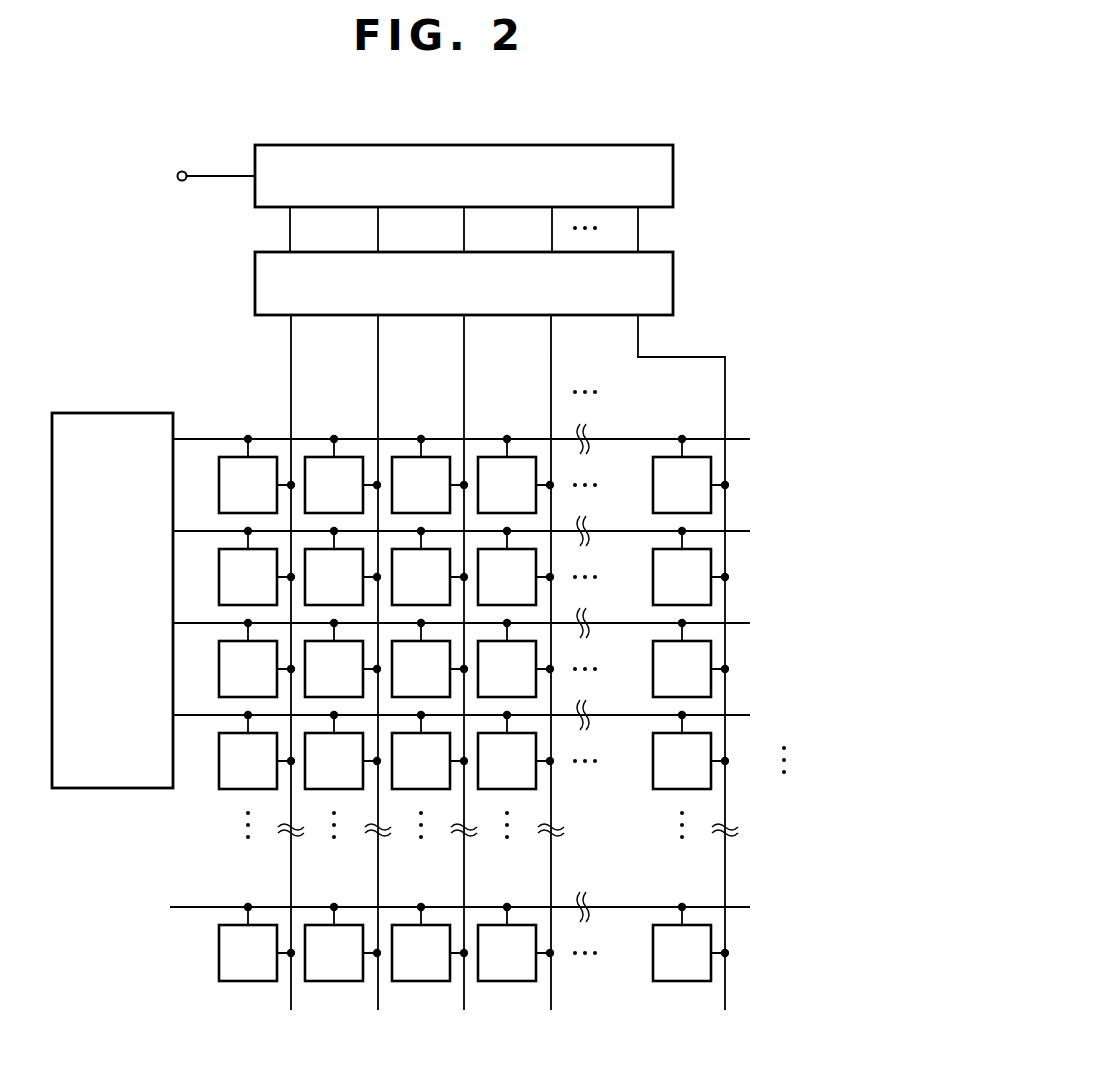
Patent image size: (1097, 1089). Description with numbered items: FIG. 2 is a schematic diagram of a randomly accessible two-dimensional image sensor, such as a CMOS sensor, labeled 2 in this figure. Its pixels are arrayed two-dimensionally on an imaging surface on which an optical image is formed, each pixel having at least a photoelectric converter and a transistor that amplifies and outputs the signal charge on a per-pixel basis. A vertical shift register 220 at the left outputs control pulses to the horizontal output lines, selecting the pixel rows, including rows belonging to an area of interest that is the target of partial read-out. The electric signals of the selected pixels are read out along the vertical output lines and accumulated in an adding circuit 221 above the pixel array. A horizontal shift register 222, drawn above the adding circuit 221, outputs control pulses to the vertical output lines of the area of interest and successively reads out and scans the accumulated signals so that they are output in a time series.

The imaging device 2 is at (712, 115).
The vertical shift register 220 is at (143, 413).
The adding circuit 221 is at (675, 288).
The horizontal shift register 222 is at (675, 182).